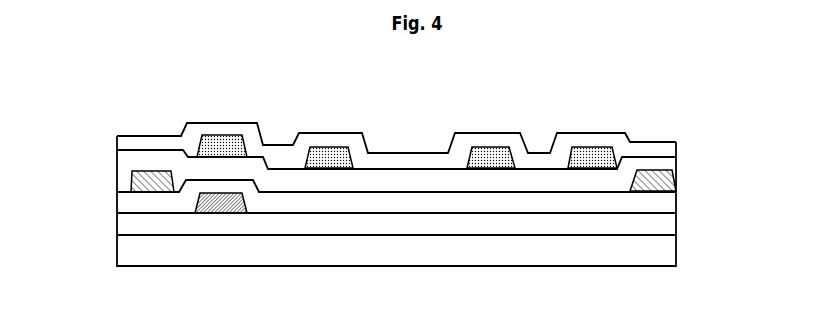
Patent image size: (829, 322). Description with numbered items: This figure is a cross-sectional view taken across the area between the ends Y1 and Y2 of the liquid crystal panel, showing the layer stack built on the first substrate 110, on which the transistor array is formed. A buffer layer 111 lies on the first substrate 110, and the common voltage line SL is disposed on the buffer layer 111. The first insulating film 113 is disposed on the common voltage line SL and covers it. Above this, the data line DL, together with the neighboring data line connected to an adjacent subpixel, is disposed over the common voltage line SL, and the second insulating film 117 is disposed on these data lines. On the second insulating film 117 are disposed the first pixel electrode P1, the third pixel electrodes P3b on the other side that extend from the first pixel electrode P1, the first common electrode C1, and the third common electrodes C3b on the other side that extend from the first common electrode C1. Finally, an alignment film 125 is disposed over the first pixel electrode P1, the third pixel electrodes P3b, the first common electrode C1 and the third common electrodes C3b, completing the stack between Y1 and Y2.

The first substrate 110 is at (675, 254).
The buffer layer 111 is at (673, 223).
The first insulating film 113 is at (673, 202).
The second insulating film 117 is at (676, 157).
The alignment film 125 is at (122, 142).
The data line DL is at (130, 182).
The common voltage line SL is at (222, 213).
The first pixel electrode P1 is at (220, 137).
The third pixel electrodes on the other side P3b is at (325, 148).
The third common electrodes on the other side C3b is at (488, 148).
The first common electrode C1 is at (595, 148).
The section area end Y1 is at (117, 285).
The section area end Y2 is at (674, 285).